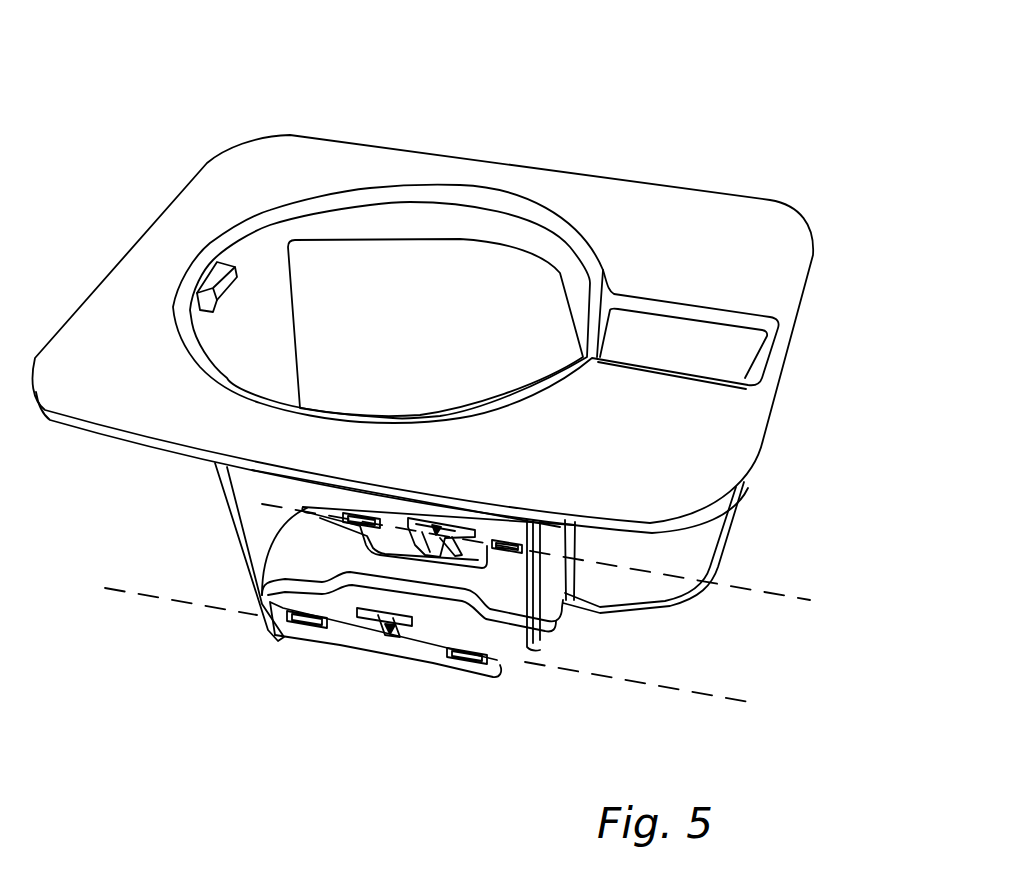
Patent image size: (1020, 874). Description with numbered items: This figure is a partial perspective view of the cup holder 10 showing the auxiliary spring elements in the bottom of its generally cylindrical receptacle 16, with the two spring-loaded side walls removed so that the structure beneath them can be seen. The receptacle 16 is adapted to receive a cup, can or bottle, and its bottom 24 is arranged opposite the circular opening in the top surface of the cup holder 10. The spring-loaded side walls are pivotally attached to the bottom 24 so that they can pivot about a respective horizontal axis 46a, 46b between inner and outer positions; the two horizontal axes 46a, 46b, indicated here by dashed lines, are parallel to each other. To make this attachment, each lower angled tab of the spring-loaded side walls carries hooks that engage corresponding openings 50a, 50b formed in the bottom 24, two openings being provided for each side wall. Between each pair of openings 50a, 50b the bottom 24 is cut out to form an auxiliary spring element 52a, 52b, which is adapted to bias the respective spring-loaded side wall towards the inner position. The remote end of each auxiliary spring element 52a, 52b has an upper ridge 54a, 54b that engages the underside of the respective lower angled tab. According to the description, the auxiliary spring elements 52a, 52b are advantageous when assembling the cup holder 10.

The cup holder 10 is at (224, 120).
The generally cylindrical receptacle 16 is at (416, 332).
The bottom 24 is at (497, 617).
The horizontal axis 46a is at (787, 598).
The horizontal axis 46b is at (640, 683).
The openings 50a is at (345, 517).
The openings 50b is at (297, 623).
The auxiliary spring element 52a is at (437, 528).
The auxiliary spring element 52b is at (393, 640).
The upper ridge 54a is at (442, 540).
The upper ridge 54b is at (370, 632).